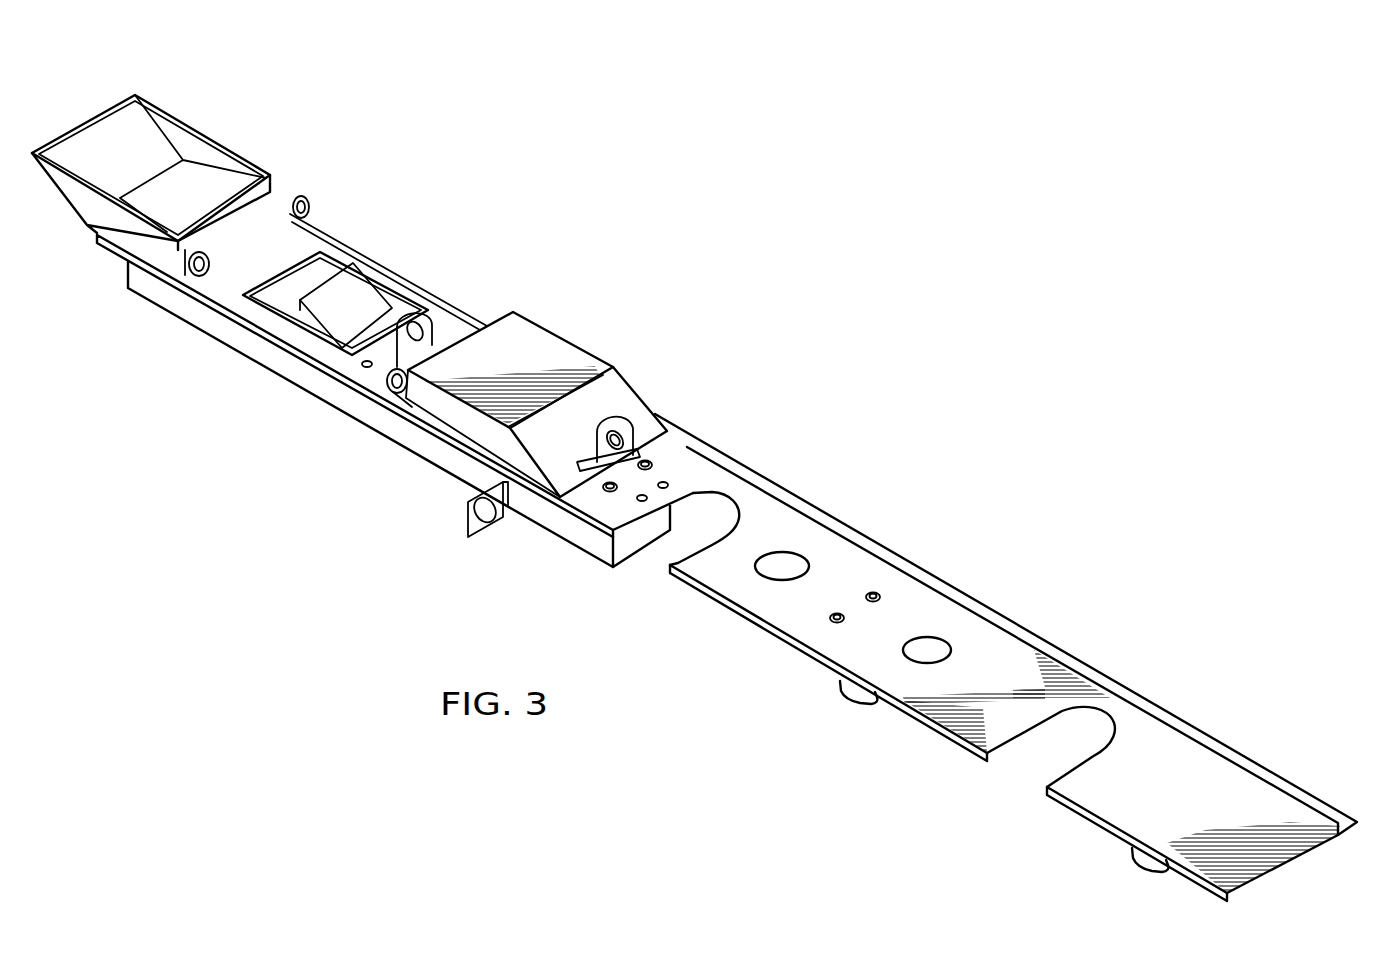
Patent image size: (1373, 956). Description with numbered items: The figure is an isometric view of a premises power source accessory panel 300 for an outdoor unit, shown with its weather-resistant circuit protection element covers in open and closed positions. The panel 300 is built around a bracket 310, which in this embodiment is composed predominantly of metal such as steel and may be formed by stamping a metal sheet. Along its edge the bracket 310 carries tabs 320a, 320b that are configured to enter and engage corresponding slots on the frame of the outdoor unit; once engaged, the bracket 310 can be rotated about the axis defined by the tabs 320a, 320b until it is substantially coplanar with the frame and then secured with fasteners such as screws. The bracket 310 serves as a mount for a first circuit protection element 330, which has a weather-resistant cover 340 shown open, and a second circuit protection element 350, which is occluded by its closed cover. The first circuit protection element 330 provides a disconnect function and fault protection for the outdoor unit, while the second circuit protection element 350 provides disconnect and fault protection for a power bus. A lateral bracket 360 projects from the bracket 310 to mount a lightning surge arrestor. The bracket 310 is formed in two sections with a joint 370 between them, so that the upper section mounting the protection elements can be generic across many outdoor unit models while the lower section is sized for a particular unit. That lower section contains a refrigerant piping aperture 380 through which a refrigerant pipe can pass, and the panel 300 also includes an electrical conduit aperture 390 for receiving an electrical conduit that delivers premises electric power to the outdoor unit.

The premises power source accessory panel 300 is at (874, 328).
The bracket 310 is at (1013, 657).
The tab 320a is at (853, 693).
The tab 320b is at (1138, 863).
The first circuit protection element 330 is at (363, 302).
The weather-resistant cover 340 is at (211, 150).
The second circuit protection element 350 is at (548, 342).
The lateral bracket 360 is at (490, 520).
The joint 370 is at (677, 460).
The refrigerant piping aperture 380 is at (1050, 770).
The electrical conduit aperture 390 is at (797, 572).